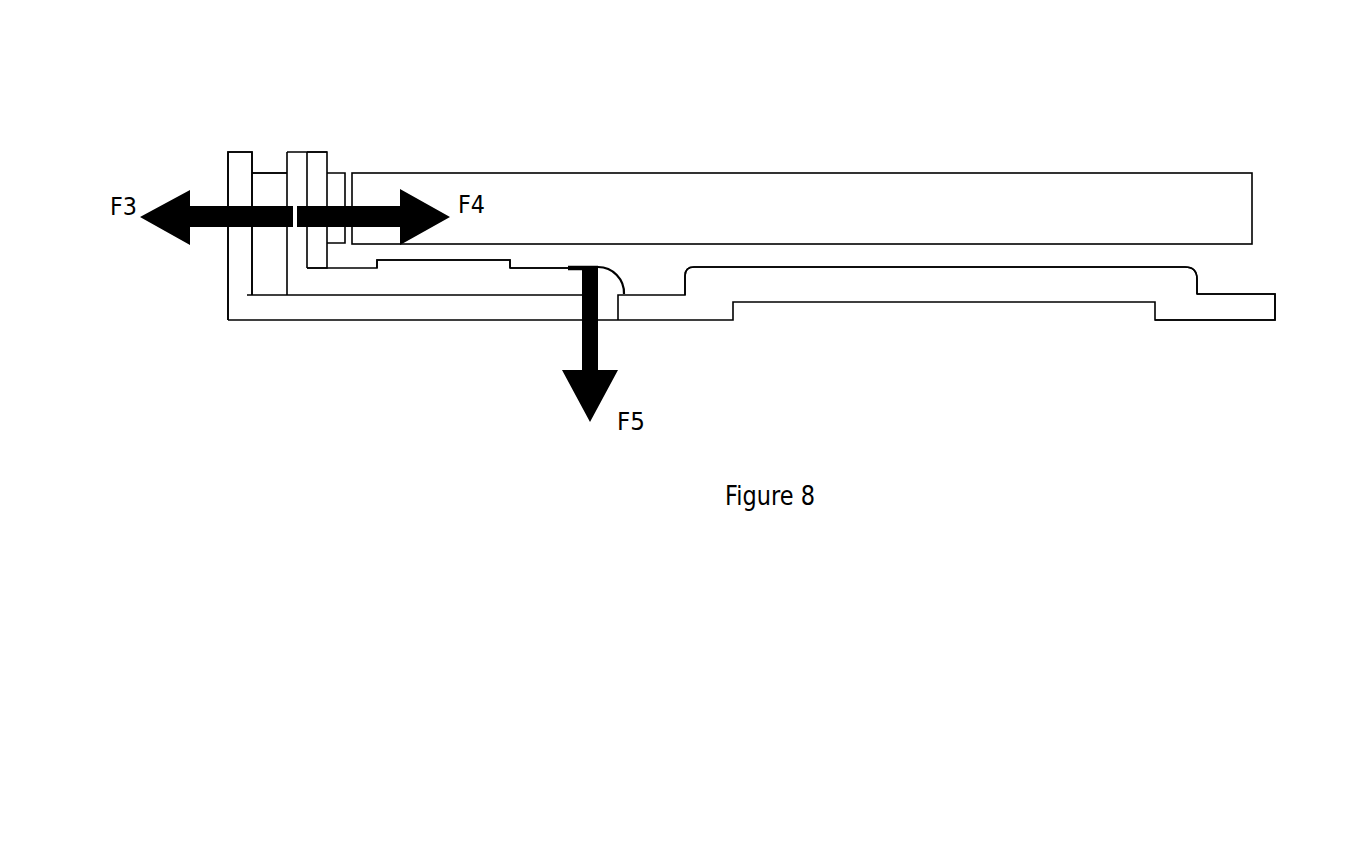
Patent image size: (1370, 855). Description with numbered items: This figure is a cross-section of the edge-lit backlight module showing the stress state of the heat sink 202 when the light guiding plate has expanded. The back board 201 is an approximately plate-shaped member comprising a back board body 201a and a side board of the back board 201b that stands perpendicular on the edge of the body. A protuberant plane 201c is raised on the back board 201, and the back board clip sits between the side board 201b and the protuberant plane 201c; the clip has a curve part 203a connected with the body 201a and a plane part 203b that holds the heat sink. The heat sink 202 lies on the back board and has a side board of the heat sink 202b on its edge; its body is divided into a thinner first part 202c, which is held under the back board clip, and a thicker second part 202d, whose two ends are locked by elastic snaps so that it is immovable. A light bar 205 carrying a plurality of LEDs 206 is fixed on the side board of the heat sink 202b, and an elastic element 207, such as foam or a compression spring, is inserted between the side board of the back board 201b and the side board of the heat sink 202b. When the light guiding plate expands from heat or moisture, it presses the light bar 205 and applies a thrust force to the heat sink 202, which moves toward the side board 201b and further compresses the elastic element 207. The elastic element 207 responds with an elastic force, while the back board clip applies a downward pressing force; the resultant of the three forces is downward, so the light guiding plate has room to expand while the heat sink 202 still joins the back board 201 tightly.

The back board 201 is at (1275, 320).
The back board body 201a is at (1212, 309).
The side board of the back board 201b is at (240, 273).
The protuberant plane 201c is at (927, 290).
The heat sink 202 is at (917, 205).
The side board of the heat sink 202b is at (295, 167).
The first part 202c is at (527, 280).
The second part 202d is at (482, 270).
The curve part 203a is at (617, 273).
The engaging portion 203b is at (587, 266).
The light bar 205 is at (318, 165).
The LEDs 206 is at (333, 178).
The elastic element 207 is at (260, 203).